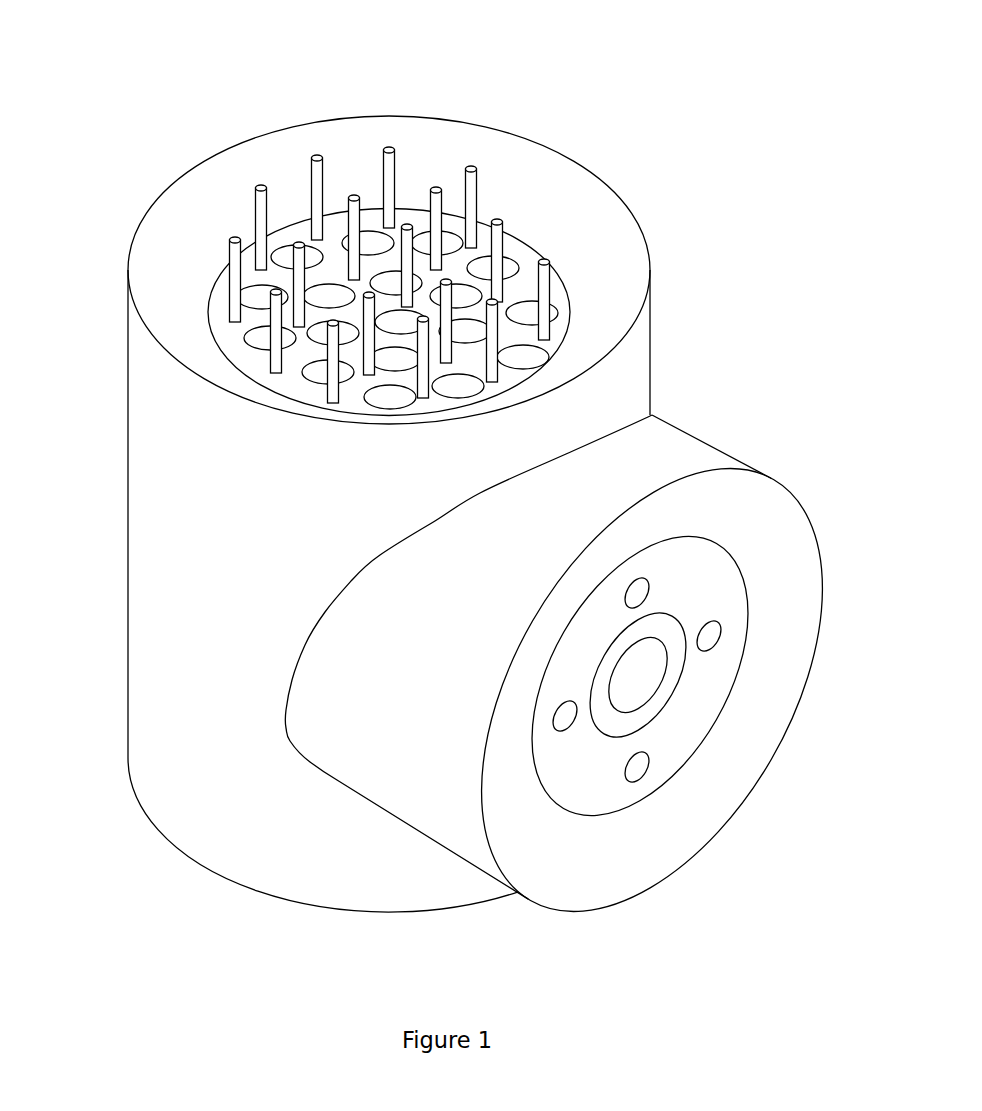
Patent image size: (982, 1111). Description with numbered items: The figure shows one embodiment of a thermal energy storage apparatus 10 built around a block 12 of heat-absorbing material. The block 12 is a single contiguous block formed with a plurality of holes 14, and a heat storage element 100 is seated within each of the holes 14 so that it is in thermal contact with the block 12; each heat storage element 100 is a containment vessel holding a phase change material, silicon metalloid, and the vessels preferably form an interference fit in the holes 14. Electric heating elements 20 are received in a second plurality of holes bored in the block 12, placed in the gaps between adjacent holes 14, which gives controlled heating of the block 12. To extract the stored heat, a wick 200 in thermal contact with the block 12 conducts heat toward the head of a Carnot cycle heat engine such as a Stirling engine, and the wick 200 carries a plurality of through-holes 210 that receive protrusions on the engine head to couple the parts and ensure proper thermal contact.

The thermal energy storage apparatus 10 is at (667, 152).
The block of heat-absorbing material 12 is at (257, 362).
The holes 14 is at (262, 297).
The electric heating elements 20 is at (395, 152).
The heat storage element 100 is at (557, 312).
The wick 200 is at (703, 577).
The through-holes 210 is at (638, 590).